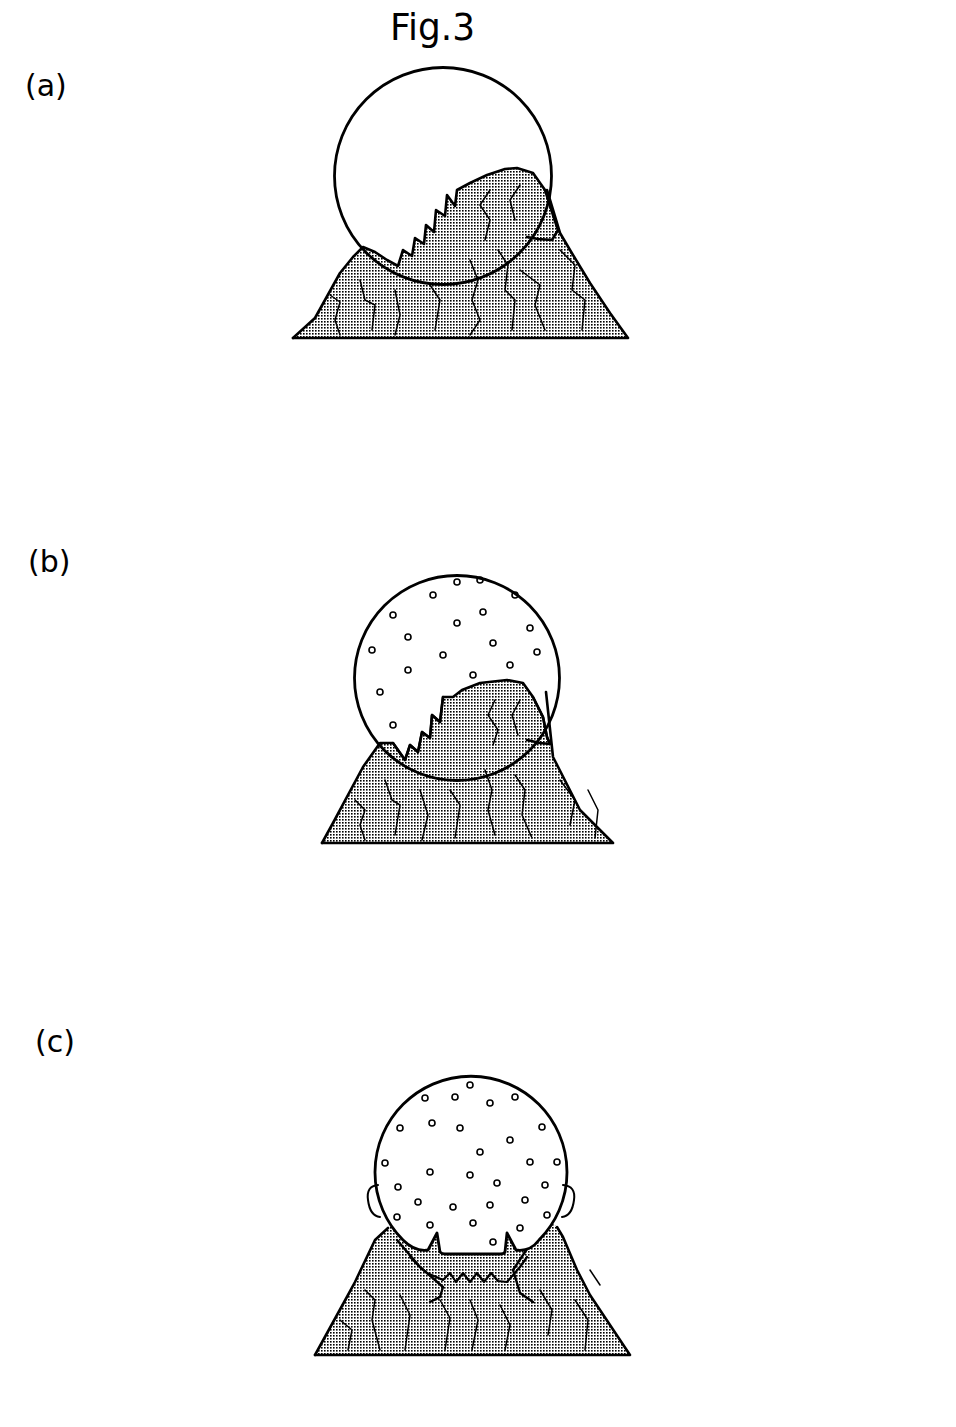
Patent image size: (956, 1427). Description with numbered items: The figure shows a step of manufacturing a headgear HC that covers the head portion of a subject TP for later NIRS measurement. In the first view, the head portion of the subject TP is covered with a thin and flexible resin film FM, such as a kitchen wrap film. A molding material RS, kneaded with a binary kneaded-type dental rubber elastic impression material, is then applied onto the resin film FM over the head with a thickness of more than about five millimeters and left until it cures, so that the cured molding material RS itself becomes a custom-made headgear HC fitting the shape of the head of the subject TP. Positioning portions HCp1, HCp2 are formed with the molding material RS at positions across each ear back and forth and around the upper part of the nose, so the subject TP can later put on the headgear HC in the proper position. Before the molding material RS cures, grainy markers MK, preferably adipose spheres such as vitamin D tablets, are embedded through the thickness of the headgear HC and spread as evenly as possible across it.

The molding material RS is at (512, 105).
The subject TP is at (326, 235).
The resin film FM is at (590, 268).
The headgear HC is at (513, 617).
The marker MK is at (431, 592).
The positioning portion HCp1 is at (407, 758).
The positioning portion HCp2 is at (540, 692).